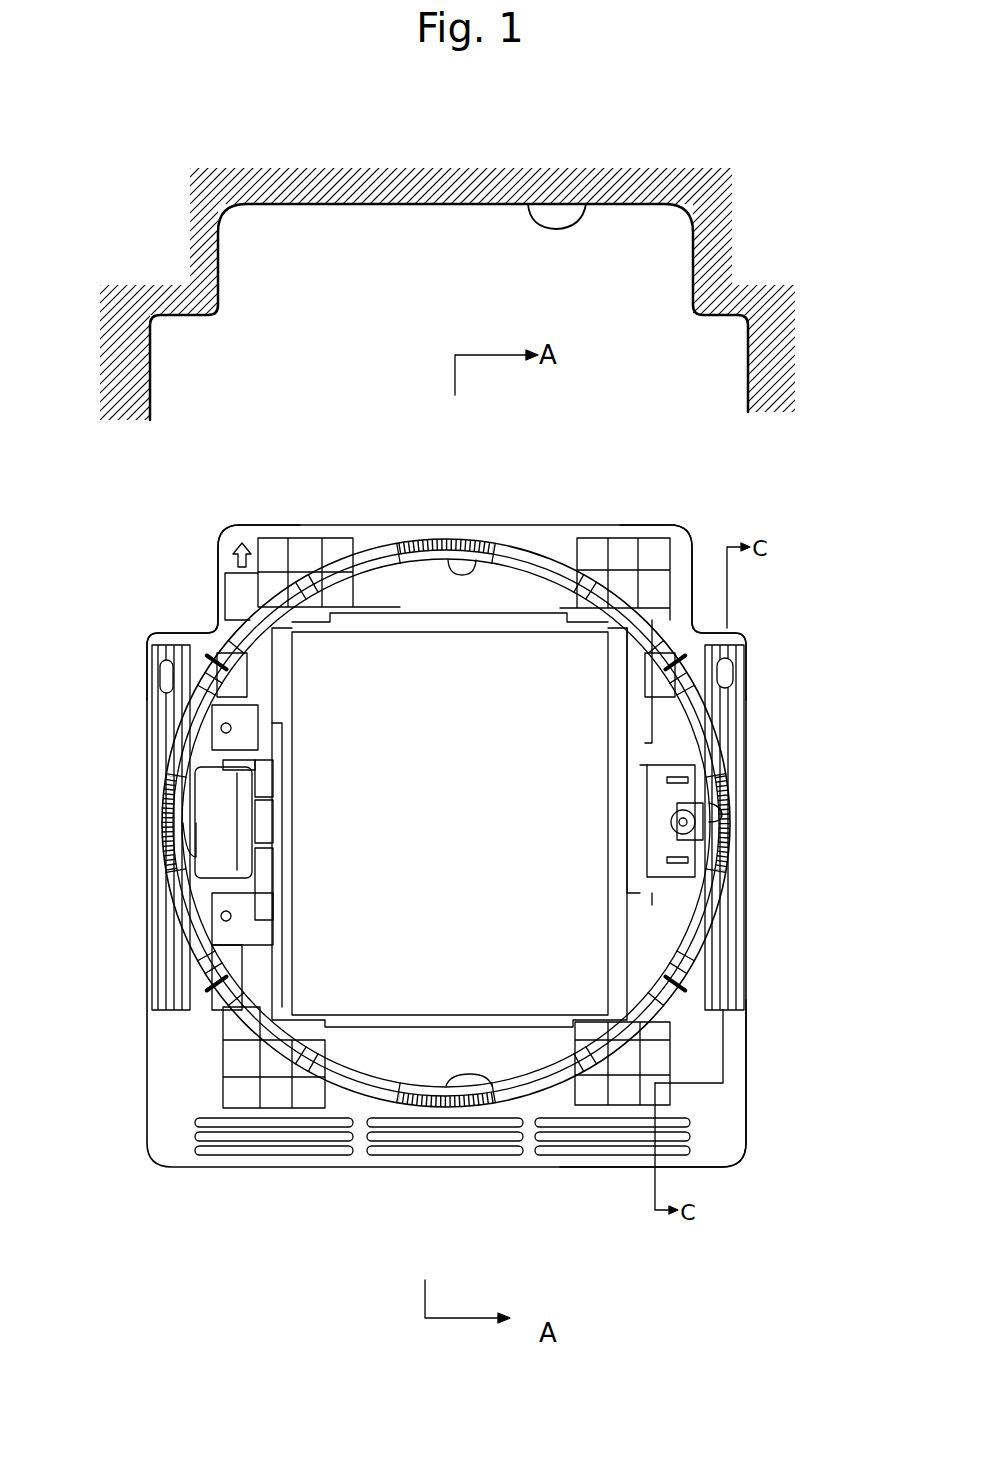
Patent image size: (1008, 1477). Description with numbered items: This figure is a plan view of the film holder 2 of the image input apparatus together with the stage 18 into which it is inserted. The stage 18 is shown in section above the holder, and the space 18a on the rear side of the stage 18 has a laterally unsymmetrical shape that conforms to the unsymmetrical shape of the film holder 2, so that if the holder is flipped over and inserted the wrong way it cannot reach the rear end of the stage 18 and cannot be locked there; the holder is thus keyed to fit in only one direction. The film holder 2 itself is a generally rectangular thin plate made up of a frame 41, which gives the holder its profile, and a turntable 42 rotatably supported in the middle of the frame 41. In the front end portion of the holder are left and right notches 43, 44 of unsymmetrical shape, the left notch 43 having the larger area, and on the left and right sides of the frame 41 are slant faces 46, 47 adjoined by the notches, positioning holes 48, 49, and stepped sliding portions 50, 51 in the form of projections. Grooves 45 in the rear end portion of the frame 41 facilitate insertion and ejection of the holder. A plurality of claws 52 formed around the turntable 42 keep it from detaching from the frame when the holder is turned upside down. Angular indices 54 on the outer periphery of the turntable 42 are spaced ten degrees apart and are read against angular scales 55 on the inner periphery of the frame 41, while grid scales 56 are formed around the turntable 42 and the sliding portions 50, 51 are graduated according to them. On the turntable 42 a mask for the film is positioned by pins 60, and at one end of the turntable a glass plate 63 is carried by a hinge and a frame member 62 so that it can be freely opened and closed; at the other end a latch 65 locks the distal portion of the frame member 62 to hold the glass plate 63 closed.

The film holder 2 is at (711, 527).
The stage 18 is at (758, 229).
The space 18a is at (606, 190).
The frame 41 is at (752, 1100).
The turntable 42 is at (388, 1048).
The left notch 43 is at (190, 592).
The right notch 44 is at (738, 587).
The grooves 45 is at (623, 1087).
The slant face 46 is at (158, 630).
The slant face 47 is at (727, 628).
The positioning hole 48 is at (165, 679).
The positioning hole 49 is at (727, 676).
The sliding portion 50 is at (180, 727).
The sliding portion 51 is at (735, 720).
The claws 52 is at (210, 645).
The angular indices 54 is at (497, 543).
The angular scales 55 is at (408, 538).
The grid scales 56 is at (620, 1150).
The pins 60 is at (221, 731).
The frame member 62 is at (278, 977).
The glass plate 63 is at (550, 665).
The latch 65 is at (678, 846).